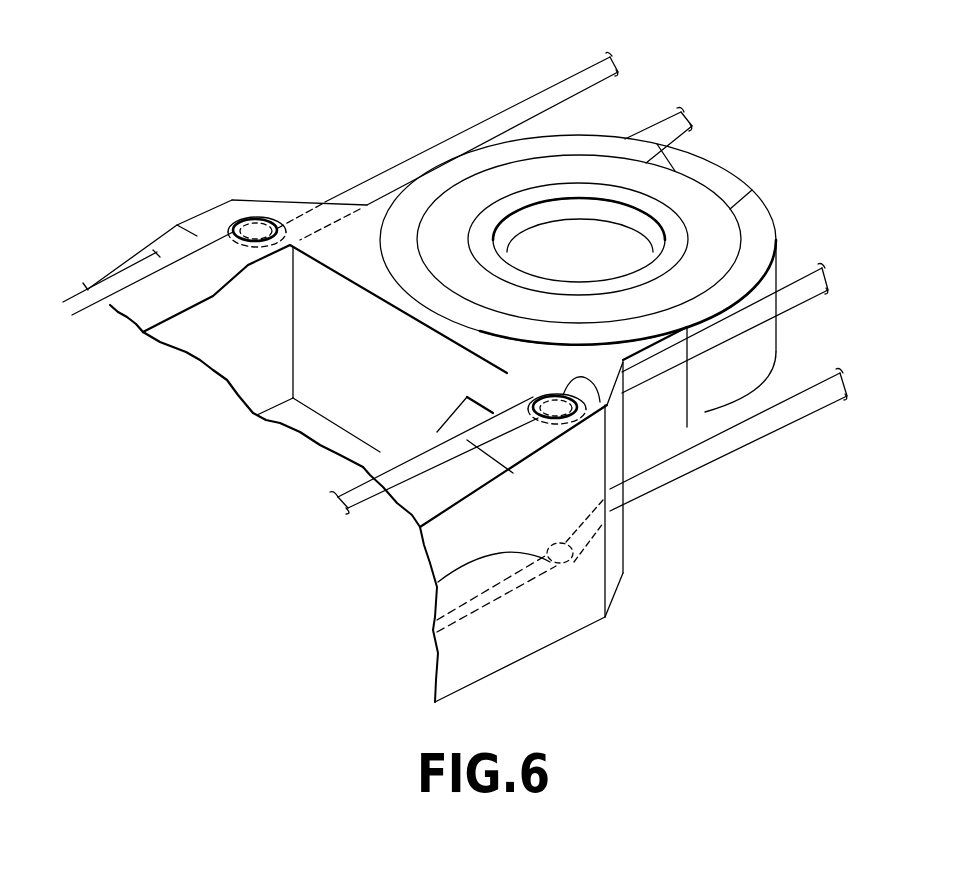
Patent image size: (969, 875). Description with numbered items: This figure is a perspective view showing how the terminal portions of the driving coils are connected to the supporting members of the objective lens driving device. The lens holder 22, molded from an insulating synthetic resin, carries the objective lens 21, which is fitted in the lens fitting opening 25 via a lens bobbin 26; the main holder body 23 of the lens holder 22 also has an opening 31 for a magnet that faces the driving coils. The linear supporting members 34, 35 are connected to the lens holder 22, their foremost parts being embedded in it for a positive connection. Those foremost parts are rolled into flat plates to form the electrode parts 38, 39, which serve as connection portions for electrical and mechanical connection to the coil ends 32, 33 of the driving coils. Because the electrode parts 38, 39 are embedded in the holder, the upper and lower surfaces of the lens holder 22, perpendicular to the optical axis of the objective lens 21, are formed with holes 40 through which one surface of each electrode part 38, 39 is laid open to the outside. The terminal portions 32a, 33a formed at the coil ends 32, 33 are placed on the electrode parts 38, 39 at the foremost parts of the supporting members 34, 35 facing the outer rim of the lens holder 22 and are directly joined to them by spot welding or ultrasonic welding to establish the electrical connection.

The objective lens 21 is at (637, 253).
The lens holder 22 is at (143, 250).
The main holder body 23 is at (100, 273).
The lens fitting opening 25 is at (657, 209).
The lens bobbin 26 is at (592, 239).
The opening for a magnet 31 is at (328, 303).
The coil end 32 is at (417, 354).
The terminal portion 32a is at (240, 230).
The coil end 33 is at (531, 537).
The terminal portion 33a is at (612, 582).
The supporting member 34 is at (515, 106).
The supporting member 35 is at (808, 400).
The electrode part 38 is at (268, 227).
The electrode part 39 is at (427, 590).
The hole 40 is at (246, 218).